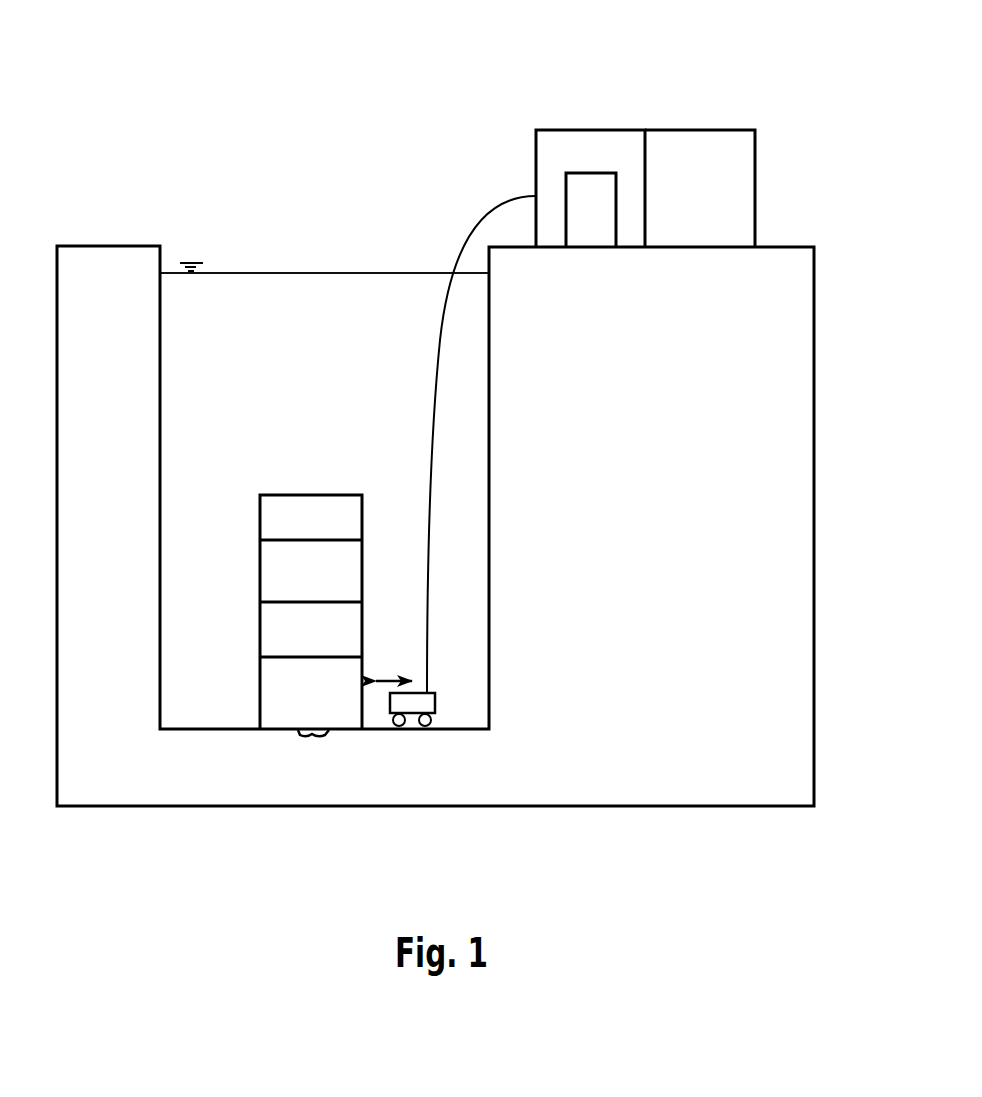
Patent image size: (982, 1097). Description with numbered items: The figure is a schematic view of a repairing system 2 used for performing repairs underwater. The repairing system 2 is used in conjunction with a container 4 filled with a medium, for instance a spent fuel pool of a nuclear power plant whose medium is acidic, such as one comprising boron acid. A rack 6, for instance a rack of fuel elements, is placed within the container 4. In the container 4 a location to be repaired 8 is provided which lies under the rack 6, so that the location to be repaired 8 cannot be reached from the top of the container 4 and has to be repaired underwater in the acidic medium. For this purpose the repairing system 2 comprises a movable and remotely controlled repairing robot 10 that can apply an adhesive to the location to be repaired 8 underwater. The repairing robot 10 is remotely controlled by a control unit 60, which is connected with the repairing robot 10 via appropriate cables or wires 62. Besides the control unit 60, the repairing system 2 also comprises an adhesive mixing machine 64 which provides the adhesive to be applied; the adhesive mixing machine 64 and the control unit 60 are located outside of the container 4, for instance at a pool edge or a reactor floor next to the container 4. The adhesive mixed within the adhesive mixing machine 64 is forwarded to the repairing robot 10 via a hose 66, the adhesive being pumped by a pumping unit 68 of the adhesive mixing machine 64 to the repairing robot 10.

The repairing system 2 is at (177, 112).
The container 4 is at (185, 245).
The rack 6 is at (302, 495).
The location to be repaired 8 is at (316, 740).
The repairing robot 10 is at (443, 707).
The control unit 60 is at (665, 105).
The cables or wires 62 is at (487, 212).
The adhesive mixing machine 64 is at (572, 117).
The hose 66 is at (443, 265).
The pumping unit 68 is at (596, 173).